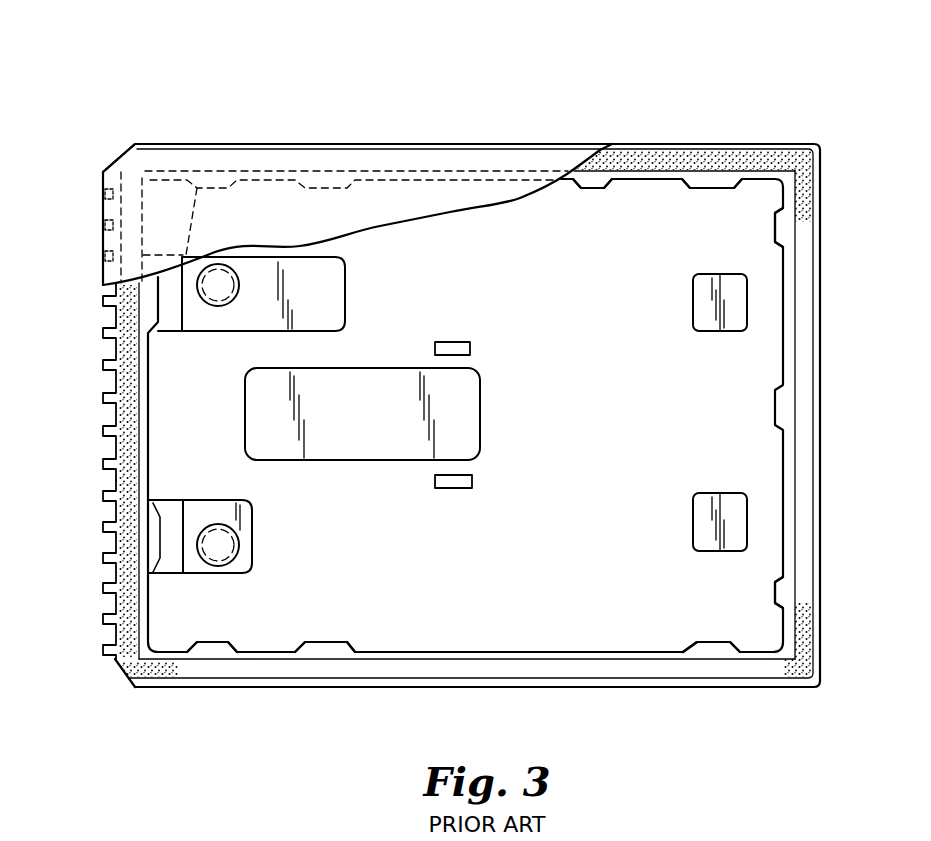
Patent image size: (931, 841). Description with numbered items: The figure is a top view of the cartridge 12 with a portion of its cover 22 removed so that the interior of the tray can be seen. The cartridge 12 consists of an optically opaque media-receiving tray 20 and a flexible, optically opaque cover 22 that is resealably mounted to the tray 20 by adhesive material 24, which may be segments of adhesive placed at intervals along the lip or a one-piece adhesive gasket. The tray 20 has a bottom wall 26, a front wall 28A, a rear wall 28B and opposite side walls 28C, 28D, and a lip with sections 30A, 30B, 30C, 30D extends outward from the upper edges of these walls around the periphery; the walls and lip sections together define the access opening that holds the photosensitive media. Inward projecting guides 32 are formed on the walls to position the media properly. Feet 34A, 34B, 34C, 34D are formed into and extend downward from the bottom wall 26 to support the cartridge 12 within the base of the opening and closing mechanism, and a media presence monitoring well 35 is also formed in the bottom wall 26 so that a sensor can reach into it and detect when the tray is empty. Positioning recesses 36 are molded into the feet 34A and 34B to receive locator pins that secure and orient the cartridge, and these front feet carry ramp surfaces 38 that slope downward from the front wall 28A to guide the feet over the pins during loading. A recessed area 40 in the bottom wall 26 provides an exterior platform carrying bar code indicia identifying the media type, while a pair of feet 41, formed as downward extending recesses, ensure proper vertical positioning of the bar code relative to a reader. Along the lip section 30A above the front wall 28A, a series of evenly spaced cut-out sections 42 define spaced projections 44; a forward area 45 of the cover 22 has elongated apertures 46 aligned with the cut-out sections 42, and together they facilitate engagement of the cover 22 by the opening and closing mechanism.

The cartridge 12 is at (545, 82).
The media-receiving tray 20 is at (414, 140).
The cover 22 is at (451, 215).
The adhesive material 24 is at (645, 156).
The bottom wall 26 is at (461, 422).
The front wall 28A is at (150, 412).
The rear wall 28B is at (781, 357).
The side wall 28C is at (451, 650).
The side wall 28D is at (648, 182).
The lip section 30A is at (127, 453).
The lip section 30B is at (806, 350).
The lip section 30C is at (584, 683).
The lip section 30D is at (738, 164).
The inward projecting guides 32 is at (774, 603).
The foot 34A is at (289, 291).
The foot 34B is at (243, 517).
The foot 34C is at (702, 525).
The foot 34D is at (702, 313).
The media presence monitoring well 35 is at (338, 310).
The positioning recesses 36 is at (220, 299).
The ramp surfaces 38 is at (172, 323).
The recessed area 40 is at (375, 432).
The feet 41 is at (443, 342).
The cut-out sections 42 is at (104, 408).
The spaced projections 44 is at (102, 527).
The forward area 45 is at (105, 172).
The elongated apertures 46 is at (104, 226).